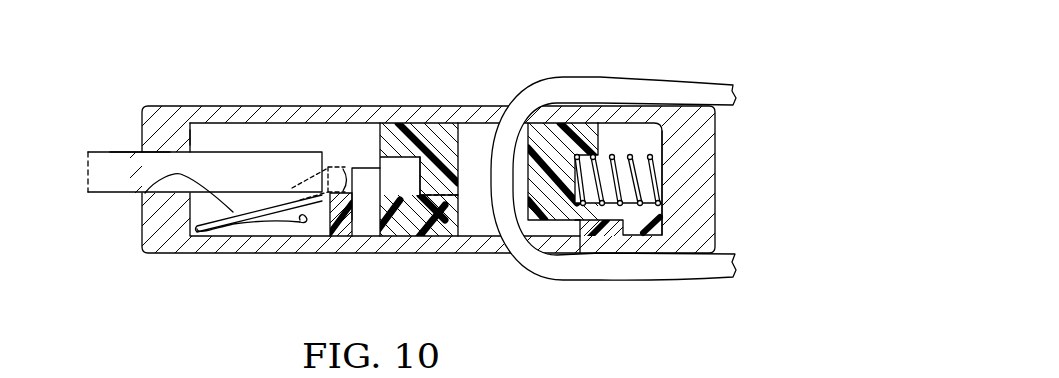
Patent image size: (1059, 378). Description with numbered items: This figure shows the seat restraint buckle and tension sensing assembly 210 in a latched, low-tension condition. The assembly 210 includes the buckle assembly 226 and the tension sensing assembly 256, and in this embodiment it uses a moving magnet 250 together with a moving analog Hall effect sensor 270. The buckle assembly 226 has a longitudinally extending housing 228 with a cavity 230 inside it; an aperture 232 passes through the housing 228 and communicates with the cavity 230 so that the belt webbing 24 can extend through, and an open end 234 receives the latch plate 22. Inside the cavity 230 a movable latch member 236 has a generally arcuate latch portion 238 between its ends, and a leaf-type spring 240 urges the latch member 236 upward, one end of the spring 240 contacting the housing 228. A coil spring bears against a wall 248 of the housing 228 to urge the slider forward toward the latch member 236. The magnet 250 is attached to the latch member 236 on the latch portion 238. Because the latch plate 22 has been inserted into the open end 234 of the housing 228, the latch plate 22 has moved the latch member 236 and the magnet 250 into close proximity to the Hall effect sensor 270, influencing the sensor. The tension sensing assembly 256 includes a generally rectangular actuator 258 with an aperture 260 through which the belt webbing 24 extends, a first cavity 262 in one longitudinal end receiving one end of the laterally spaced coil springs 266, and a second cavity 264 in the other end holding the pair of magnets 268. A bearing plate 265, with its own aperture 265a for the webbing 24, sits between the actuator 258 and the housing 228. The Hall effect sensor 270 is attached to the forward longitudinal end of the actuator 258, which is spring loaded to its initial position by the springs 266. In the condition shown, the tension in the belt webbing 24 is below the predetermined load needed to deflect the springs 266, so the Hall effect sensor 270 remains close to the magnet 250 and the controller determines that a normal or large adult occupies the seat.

The latch plate 22 is at (233, 168).
The belt webbing 24 is at (677, 92).
The seat restraint buckle and tension sensing assembly 210 is at (93, 83).
The buckle assembly 226 is at (171, 100).
The housing 228 is at (425, 108).
The cavity 230 is at (276, 124).
The aperture 232 is at (582, 118).
The open end 234 is at (165, 152).
The latch member 236 is at (145, 193).
The latch portion 238 is at (290, 208).
The spring 240 is at (222, 228).
The wall 248 is at (333, 220).
The magnet 250 is at (331, 178).
The tension sensing assembly 256 is at (600, 136).
The actuator 258 is at (457, 197).
The aperture 260 is at (460, 143).
The first cavity 262 is at (580, 183).
The second cavity 264 is at (390, 160).
The bearing plate 265 is at (635, 228).
The aperture 265a is at (452, 227).
The springs 266 is at (637, 180).
The magnets 268 is at (417, 178).
The Hall effect sensor 270 is at (366, 200).